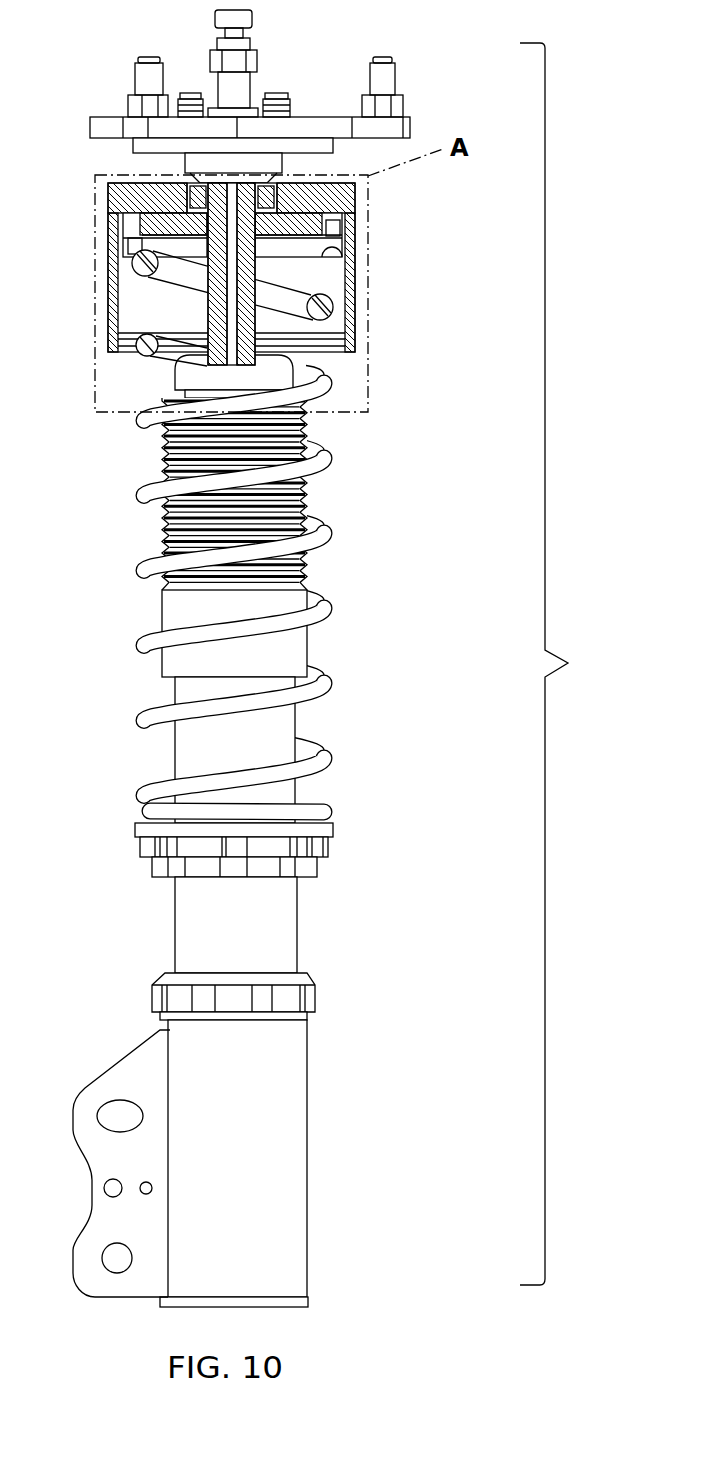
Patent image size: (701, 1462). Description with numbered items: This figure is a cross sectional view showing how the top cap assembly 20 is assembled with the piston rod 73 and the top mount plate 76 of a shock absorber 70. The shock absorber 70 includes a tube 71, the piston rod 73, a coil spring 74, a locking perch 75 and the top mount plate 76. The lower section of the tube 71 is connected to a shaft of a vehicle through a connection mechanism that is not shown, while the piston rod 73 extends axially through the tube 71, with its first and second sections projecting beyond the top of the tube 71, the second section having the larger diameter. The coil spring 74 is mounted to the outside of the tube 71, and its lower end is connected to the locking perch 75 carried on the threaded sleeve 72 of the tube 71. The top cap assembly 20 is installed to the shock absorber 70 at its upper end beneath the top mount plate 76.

The top cap assembly 20 is at (372, 288).
The shock absorber 70 is at (560, 664).
The tube 71 is at (311, 716).
The threaded sleeve 72 is at (275, 917).
The piston rod 73 is at (203, 29).
The coil spring 74 is at (320, 523).
The locking perch 75 is at (326, 862).
The top mount plate 76 is at (425, 116).